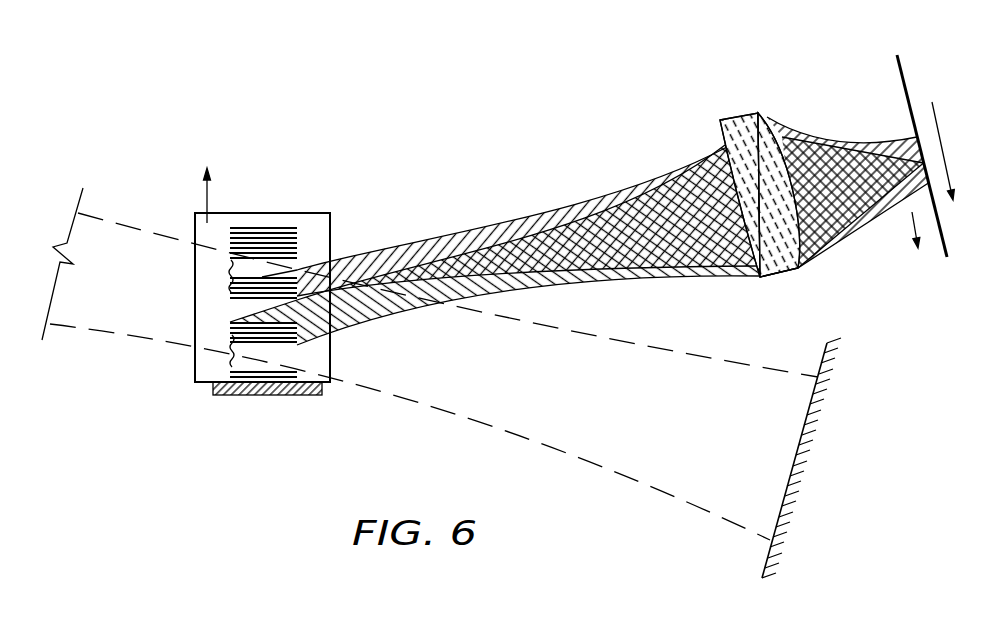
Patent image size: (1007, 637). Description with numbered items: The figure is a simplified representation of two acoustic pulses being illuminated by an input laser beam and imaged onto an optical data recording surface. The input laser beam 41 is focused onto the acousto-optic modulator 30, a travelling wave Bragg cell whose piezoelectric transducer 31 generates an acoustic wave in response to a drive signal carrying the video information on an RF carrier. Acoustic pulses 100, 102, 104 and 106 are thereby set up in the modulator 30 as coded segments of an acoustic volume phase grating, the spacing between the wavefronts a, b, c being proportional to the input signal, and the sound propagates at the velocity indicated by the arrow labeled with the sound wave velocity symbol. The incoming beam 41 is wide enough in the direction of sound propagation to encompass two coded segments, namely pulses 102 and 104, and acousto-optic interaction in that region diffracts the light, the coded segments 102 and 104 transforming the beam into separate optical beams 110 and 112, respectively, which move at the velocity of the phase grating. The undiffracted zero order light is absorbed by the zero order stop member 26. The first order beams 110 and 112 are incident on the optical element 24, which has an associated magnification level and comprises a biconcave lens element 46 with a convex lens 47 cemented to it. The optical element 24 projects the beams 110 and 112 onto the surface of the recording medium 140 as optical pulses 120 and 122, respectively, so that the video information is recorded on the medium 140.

The optical element 24 is at (722, 108).
The zero order stop member 26 is at (818, 364).
The acousto-optic modulator 30 is at (192, 396).
The piezoelectric transducer 31 is at (318, 396).
The input laser beam 41 is at (147, 238).
The biconcave lens element 46 is at (761, 280).
The convex lens 47 is at (800, 262).
The acoustic pulse 100 is at (297, 238).
The acoustic pulse 102 is at (232, 284).
The acoustic pulse 104 is at (232, 337).
The acoustic pulse 106 is at (297, 370).
The optical beam 110 is at (458, 236).
The optical beam 112 is at (508, 288).
The optical pulse 120 is at (905, 198).
The optical pulse 122 is at (916, 136).
The recording medium 140 is at (936, 255).